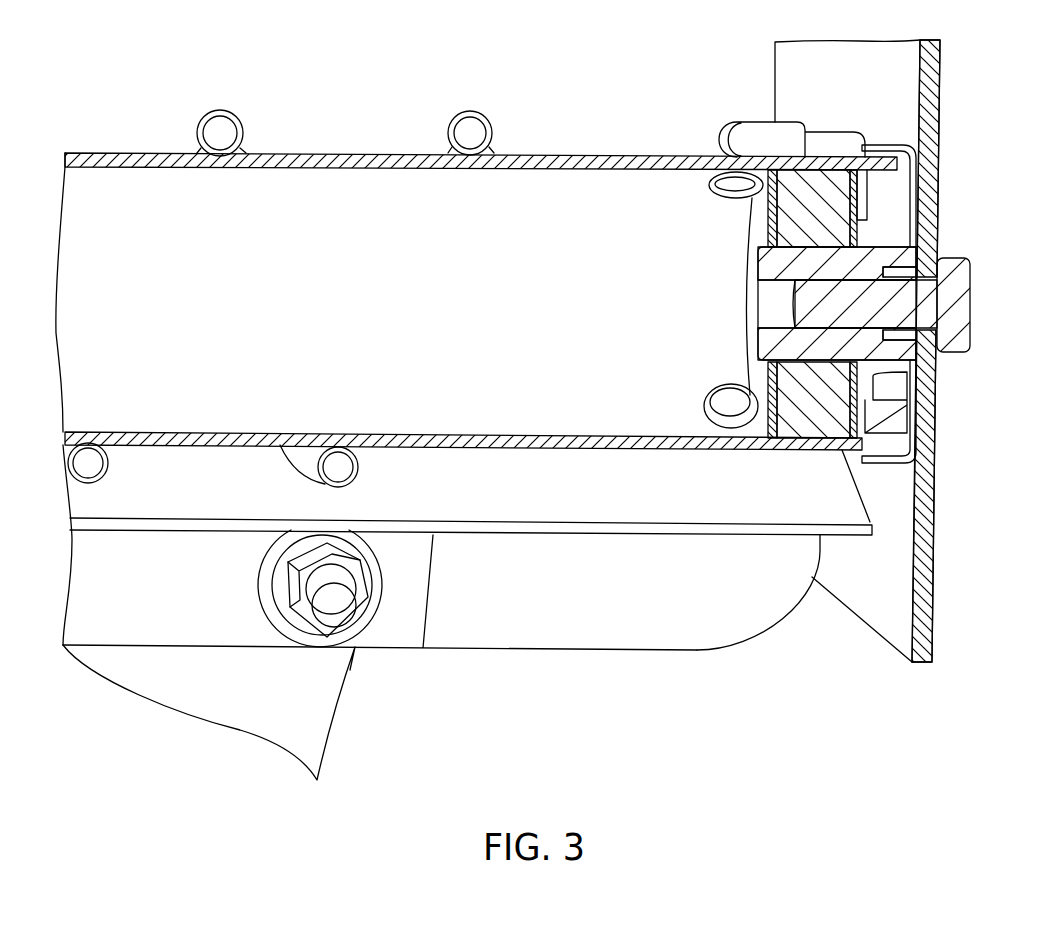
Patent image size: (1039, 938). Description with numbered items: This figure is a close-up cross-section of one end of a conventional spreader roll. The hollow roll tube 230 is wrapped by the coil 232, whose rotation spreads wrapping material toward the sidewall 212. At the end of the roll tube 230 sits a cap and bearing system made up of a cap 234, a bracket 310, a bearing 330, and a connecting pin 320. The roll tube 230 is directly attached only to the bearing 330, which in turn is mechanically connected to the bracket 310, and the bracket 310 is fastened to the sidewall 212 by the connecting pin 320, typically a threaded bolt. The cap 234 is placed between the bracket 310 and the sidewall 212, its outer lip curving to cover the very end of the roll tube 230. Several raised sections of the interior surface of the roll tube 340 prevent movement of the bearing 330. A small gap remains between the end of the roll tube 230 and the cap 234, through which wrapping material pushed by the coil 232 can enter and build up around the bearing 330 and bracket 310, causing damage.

The sidewall 212 is at (907, 88).
The roll tube 230 is at (495, 370).
The coil 232 is at (222, 128).
The cap 234 is at (880, 458).
The bracket 310 is at (900, 237).
The connecting pin 320 is at (955, 302).
The bearing 330 is at (808, 430).
The raised sections of the interior surface of the roll tube 340 is at (733, 405).